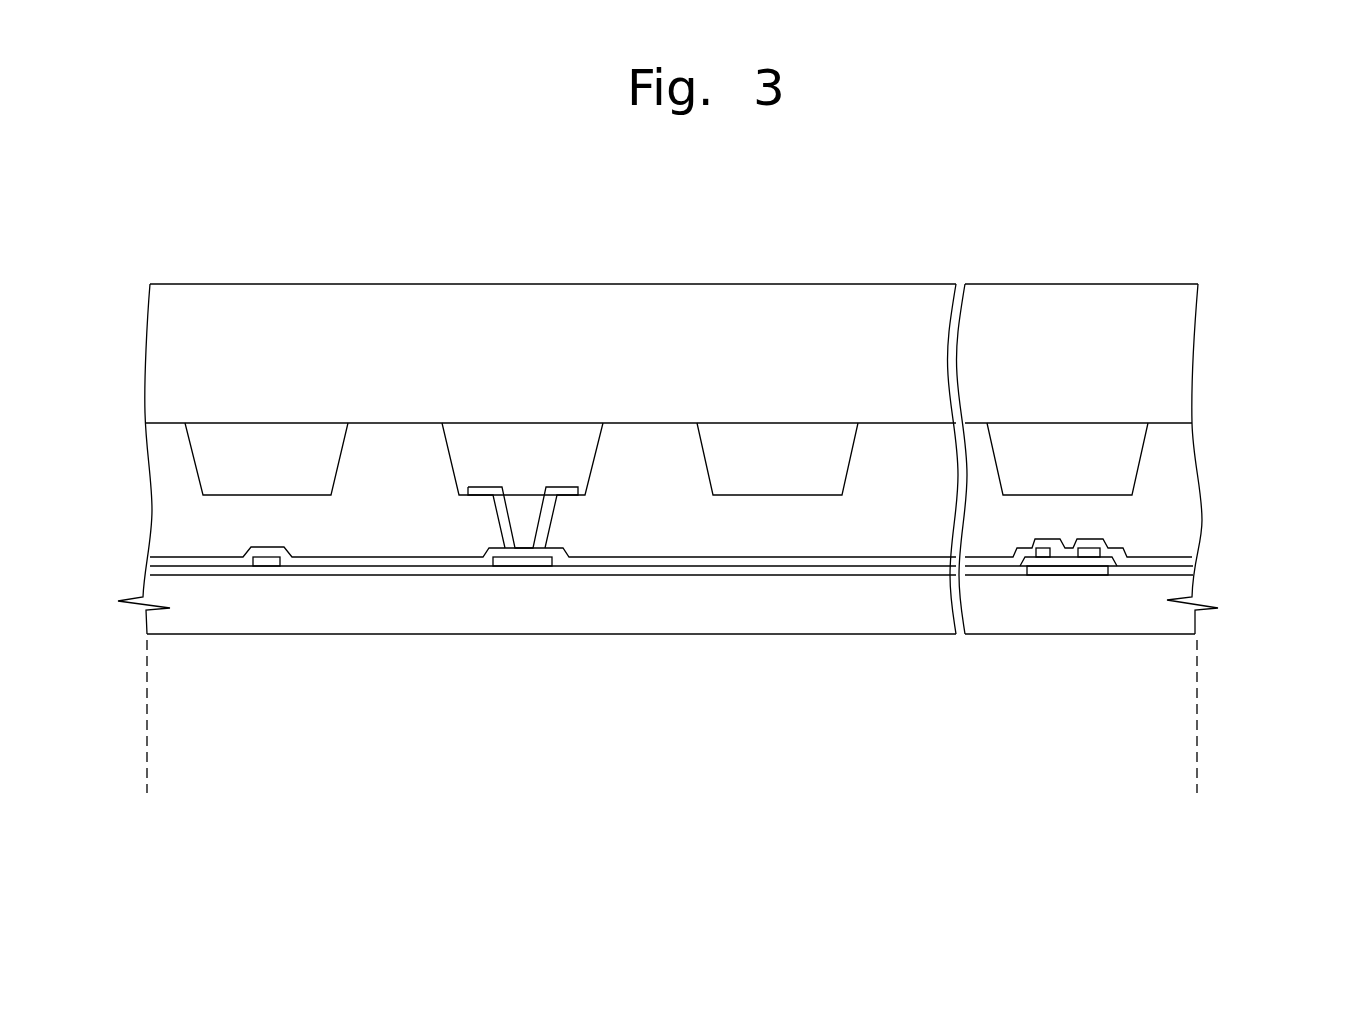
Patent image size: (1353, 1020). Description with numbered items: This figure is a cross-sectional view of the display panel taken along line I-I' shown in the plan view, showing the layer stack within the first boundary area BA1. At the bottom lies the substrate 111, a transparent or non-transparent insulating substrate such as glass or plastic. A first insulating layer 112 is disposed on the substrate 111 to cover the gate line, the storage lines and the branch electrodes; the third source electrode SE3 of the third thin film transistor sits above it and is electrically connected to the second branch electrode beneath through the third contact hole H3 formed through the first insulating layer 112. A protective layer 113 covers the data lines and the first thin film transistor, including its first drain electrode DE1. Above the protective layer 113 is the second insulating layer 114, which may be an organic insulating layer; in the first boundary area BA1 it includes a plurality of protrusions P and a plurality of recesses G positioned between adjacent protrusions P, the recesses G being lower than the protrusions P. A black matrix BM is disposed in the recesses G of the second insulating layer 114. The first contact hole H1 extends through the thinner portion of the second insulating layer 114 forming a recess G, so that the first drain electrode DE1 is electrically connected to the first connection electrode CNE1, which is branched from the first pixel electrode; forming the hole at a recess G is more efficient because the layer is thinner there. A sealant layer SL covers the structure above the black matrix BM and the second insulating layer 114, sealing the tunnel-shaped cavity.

The sealant layer SL is at (1193, 342).
The black matrix BM is at (782, 475).
The second insulating layer 114 is at (1187, 515).
The protective layer 113 is at (1177, 563).
The first insulating layer 112 is at (1187, 572).
The substrate 111 is at (1187, 590).
The first drain electrode DE1 is at (268, 562).
The first connection electrode CNE1 is at (563, 490).
The first contact hole H1 is at (521, 520).
The protrusion P is at (657, 423).
The recess G is at (747, 495).
The third source electrode SE3 is at (1042, 553).
The third contact hole H3 is at (1065, 529).
The first boundary area BA1 is at (147, 782).
The line I-I' I is at (672, 735).